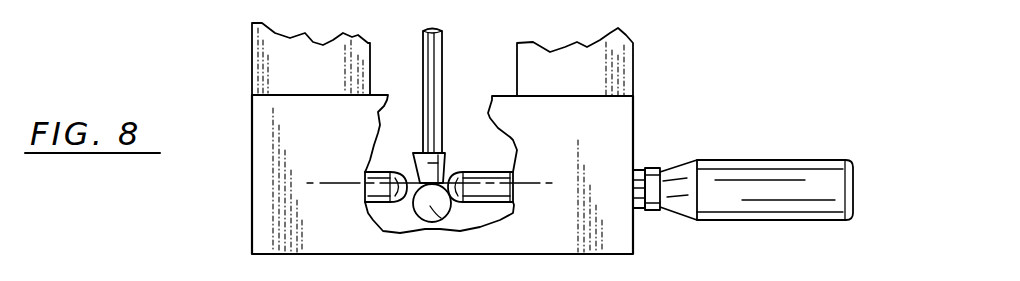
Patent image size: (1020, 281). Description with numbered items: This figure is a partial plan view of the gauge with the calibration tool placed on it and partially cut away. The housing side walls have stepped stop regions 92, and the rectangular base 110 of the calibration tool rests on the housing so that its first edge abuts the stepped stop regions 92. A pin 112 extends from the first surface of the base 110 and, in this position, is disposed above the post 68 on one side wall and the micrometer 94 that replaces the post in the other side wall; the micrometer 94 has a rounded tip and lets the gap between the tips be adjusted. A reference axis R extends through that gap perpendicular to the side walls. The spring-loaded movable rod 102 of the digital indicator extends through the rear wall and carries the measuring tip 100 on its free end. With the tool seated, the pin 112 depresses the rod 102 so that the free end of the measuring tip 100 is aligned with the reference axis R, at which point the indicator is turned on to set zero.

The stepped stop regions 92 is at (283, 95).
The base 110 is at (333, 98).
The movable rod 102 is at (443, 50).
The measuring tip 100 is at (445, 156).
The pin 112 is at (450, 226).
The post 68 is at (368, 216).
The micrometer 94 is at (508, 177).
The reference axis R is at (338, 183).